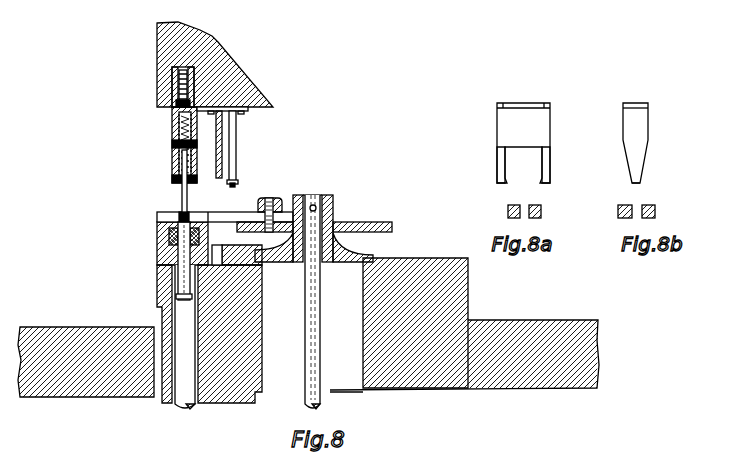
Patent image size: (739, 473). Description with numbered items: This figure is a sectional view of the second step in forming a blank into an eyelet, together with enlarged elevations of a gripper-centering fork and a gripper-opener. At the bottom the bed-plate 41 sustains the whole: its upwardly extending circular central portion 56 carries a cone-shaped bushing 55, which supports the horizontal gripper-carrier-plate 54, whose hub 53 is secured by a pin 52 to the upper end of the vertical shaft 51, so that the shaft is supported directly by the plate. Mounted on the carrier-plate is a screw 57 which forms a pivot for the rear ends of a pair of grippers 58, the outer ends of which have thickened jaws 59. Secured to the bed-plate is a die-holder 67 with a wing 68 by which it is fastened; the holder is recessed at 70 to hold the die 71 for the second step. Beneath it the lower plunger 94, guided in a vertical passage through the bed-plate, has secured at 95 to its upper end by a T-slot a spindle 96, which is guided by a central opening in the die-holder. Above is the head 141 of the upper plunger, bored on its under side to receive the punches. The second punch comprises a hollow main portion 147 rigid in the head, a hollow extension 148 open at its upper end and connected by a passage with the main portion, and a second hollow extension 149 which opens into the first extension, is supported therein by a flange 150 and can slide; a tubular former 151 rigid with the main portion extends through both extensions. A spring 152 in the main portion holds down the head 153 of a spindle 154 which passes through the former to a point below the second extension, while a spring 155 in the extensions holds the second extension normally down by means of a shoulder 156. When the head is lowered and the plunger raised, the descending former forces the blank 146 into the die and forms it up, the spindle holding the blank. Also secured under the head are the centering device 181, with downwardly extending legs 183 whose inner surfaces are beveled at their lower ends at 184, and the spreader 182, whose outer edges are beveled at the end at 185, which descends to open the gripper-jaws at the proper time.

In FIG. 8, the bed-plate 41 is at (55, 327).
In FIG. 8, the vertical shaft 51 is at (325, 404).
In FIG. 8, the pin 52 is at (312, 195).
In FIG. 8, the hub 53 is at (333, 205).
In FIG. 8, the gripper-carrier-plate 54 is at (392, 225).
In FIG. 8, the cone-shaped bushing 55 is at (350, 240).
In FIG. 8, the circular central portion of the bed-plate 56 is at (445, 258).
In FIG. 8, the screw 57 is at (270, 200).
In FIG. 8, the gripper 58 is at (222, 218).
In FIG. 8A, the gripper 58 is at (508, 212).
In FIG. 8B, the gripper 58 is at (618, 211).
In FIG. 8, the jaw 59 is at (157, 216).
In FIG. 8, the die-holder 67 is at (160, 250).
In FIG. 8, the wing 68 is at (222, 251).
In FIG. 8, the recess 70 is at (200, 235).
In FIG. 8, the die 71 is at (168, 233).
In FIG. 8, the plunger 94 is at (176, 408).
In FIG. 8, the T-slot connection 95 is at (186, 296).
In FIG. 8, the spindle 96 is at (180, 275).
In FIG. 8, the head 141 is at (157, 95).
In FIG. 8, the blank 146 is at (188, 212).
In FIG. 8, the hollow main portion 147 is at (157, 107).
In FIG. 8, the hollow extension 148 is at (172, 146).
In FIG. 8, the second hollow extension 149 is at (178, 173).
In FIG. 8, the flange 150 is at (183, 162).
In FIG. 8, the tubular former 151 is at (172, 132).
In FIG. 8, the spring 152 is at (182, 93).
In FIG. 8, the head of spindle 153 is at (185, 104).
In FIG. 8, the spindle 154 is at (182, 200).
In FIG. 8, the spring 155 is at (197, 160).
In FIG. 8, the shoulder 156 is at (236, 178).
In FIG. 8, the centering device 181 is at (222, 130).
In FIG. 8A, the centering device 181 is at (497, 126).
In FIG. 8B, the spreader 182 is at (648, 124).
In FIG. 8, the leg 183 is at (236, 165).
In FIG. 8A, the leg 183 is at (497, 163).
In FIG. 8A, the bevel 184 is at (540, 178).
In FIG. 8, the bevel 185 is at (237, 183).
In FIG. 8B, the bevel 185 is at (643, 168).